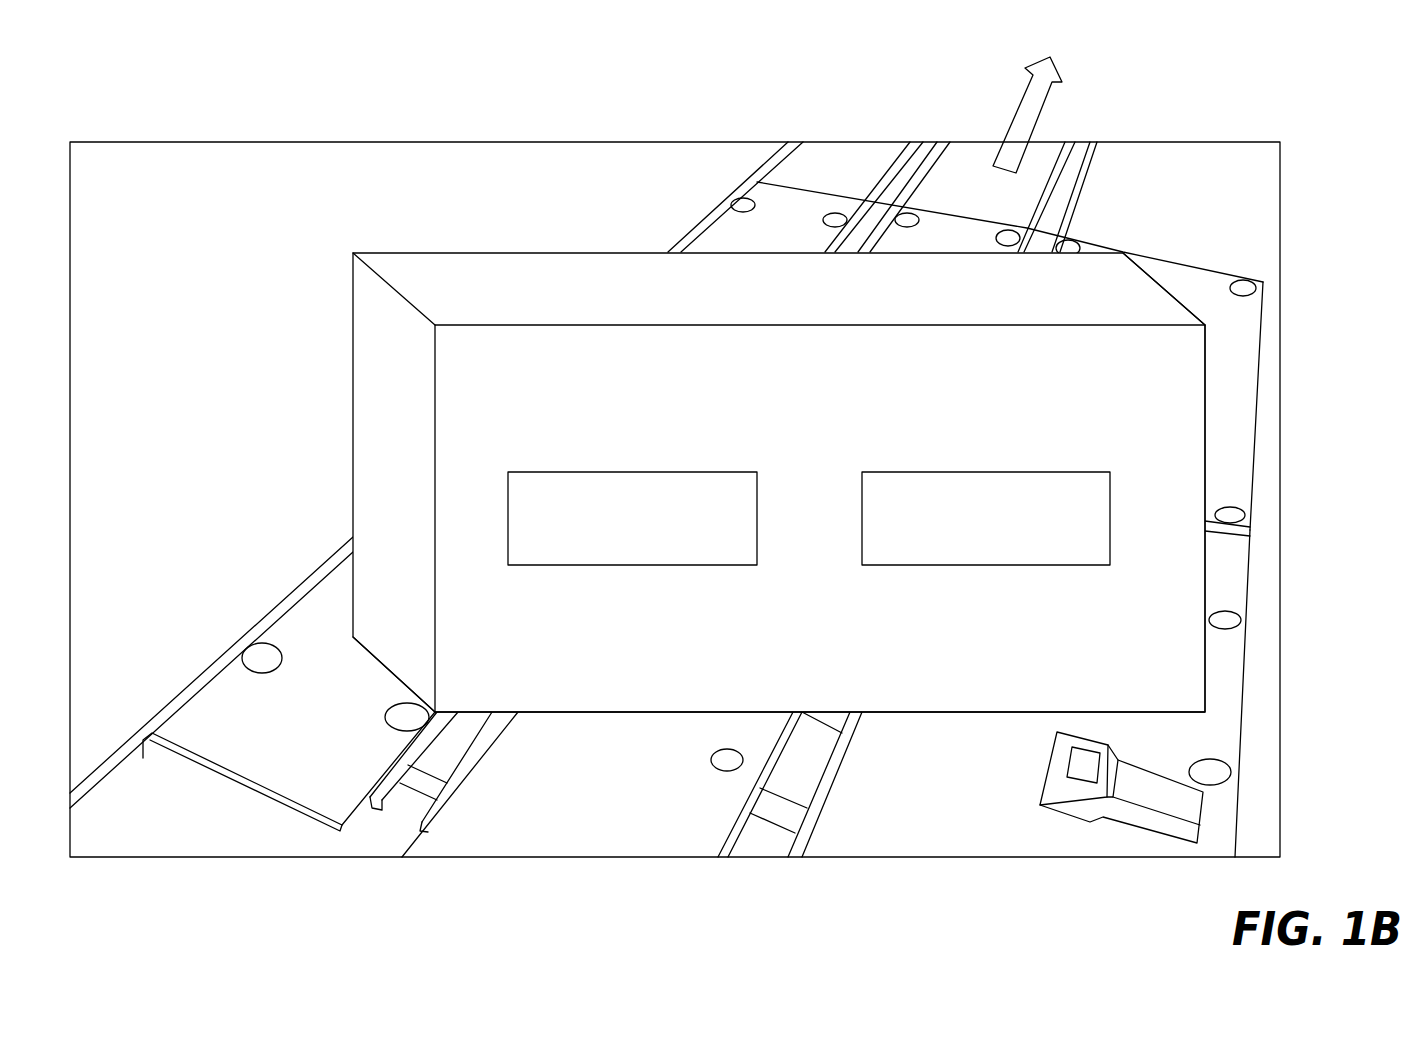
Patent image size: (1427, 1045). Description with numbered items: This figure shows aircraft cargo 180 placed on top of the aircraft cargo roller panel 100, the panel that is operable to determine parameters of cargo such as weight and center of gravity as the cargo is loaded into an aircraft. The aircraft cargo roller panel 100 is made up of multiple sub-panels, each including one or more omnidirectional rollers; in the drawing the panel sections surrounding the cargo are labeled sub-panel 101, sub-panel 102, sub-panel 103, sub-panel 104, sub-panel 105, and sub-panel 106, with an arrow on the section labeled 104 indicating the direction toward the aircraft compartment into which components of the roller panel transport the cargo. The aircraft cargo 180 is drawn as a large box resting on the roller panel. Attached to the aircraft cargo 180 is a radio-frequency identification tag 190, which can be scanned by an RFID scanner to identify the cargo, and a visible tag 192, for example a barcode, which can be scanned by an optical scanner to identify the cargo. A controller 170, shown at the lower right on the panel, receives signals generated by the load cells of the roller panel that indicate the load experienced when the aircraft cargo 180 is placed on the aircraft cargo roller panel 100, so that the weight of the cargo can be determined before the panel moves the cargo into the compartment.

The aircraft cargo roller panel 100 is at (675, 499).
The sub-panel 101 is at (1233, 708).
The upper platform 102 is at (1243, 362).
The conveyor 103 is at (608, 840).
The lane to compartment 104 is at (962, 222).
The shelf 105 is at (328, 590).
The lane 106 is at (793, 197).
The controller 170 is at (1187, 832).
The aircraft cargo 180 is at (382, 397).
The radio-frequency identification tag 190 is at (632, 518).
The visible tag 192 is at (986, 518).